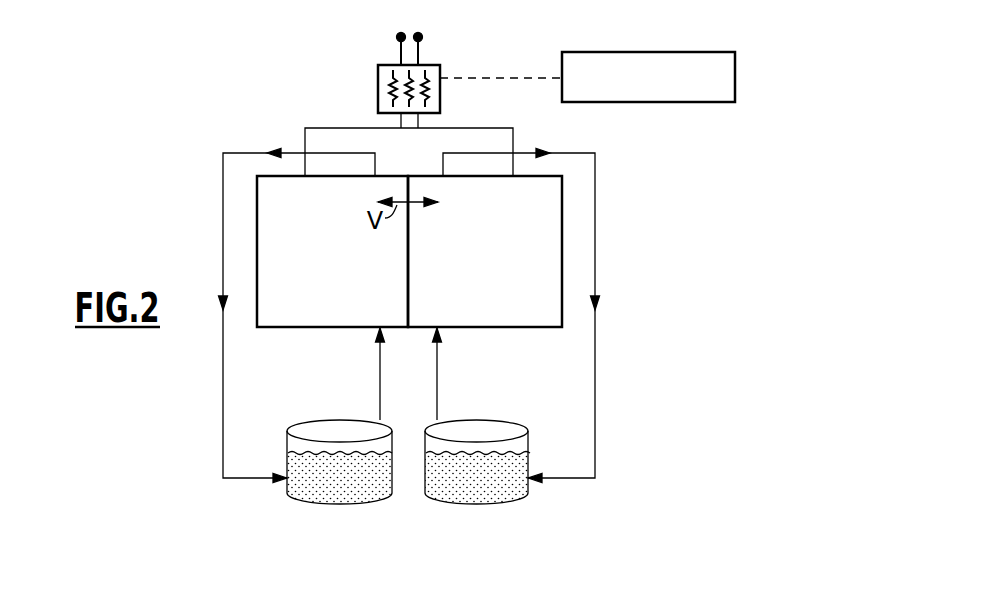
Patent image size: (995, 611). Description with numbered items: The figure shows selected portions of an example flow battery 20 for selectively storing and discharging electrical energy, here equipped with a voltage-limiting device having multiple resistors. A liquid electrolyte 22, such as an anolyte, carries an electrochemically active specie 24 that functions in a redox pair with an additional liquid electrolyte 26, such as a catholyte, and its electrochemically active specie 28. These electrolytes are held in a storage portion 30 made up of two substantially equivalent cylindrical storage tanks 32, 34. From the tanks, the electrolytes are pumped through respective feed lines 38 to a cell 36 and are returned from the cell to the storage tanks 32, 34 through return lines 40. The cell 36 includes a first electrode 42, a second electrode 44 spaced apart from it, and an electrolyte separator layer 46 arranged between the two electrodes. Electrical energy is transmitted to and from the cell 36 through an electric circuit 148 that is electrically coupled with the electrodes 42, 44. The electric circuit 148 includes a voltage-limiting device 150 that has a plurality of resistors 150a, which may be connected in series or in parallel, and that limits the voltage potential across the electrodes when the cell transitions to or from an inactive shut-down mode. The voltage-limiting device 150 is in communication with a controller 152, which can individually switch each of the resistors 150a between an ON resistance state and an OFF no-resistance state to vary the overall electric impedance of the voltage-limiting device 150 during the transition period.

The flow battery 20 is at (185, 352).
The liquid electrolyte 22 is at (295, 498).
The electrochemically active specie 24 is at (348, 488).
The additional liquid electrolyte 26 is at (505, 476).
The electrochemically active specie 28 is at (467, 495).
The storage portion 30 is at (437, 534).
The storage tank 32 is at (287, 440).
The storage tank 34 is at (530, 440).
The cell 36 is at (501, 340).
The feed lines 38 is at (380, 385).
The return lines 40 is at (223, 253).
The first electrode 42 is at (290, 327).
The second electrode 44 is at (548, 329).
The electrolyte separator layer 46 is at (410, 302).
The electric circuit 148 is at (474, 118).
The voltage-limiting device 150 is at (378, 78).
The resistors 150a is at (403, 134).
The controller 152 is at (668, 102).